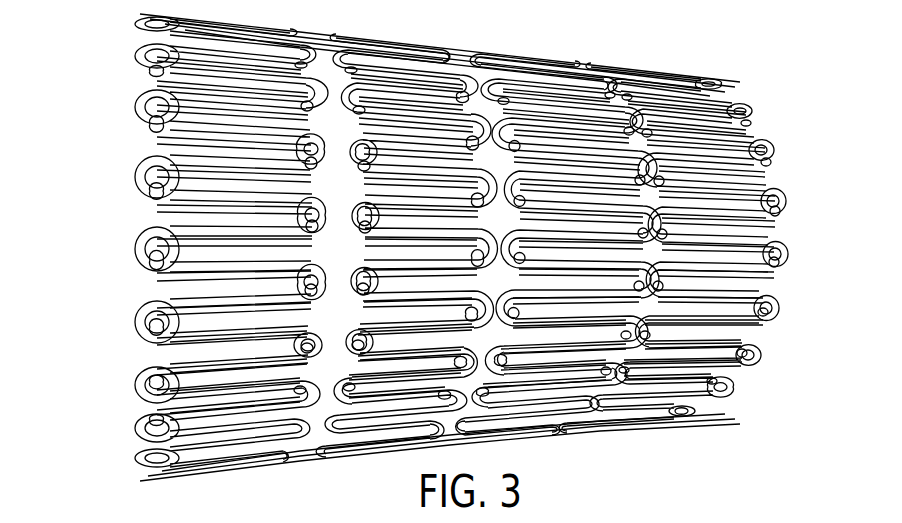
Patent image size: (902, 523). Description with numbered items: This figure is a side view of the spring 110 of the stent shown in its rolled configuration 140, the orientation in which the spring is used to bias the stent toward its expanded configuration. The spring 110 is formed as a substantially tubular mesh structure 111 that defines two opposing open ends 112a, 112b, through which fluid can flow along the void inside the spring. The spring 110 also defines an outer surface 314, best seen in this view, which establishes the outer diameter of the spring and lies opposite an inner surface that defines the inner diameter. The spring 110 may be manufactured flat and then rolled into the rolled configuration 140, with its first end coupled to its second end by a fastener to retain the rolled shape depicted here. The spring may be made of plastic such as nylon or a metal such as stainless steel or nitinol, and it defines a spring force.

The spring 110 is at (80, 78).
The rolled configuration 140 is at (795, 68).
The tubular mesh structure 111 is at (778, 148).
The open end 112a is at (138, 270).
The open end 112b is at (790, 258).
The outer surface 314 is at (138, 403).